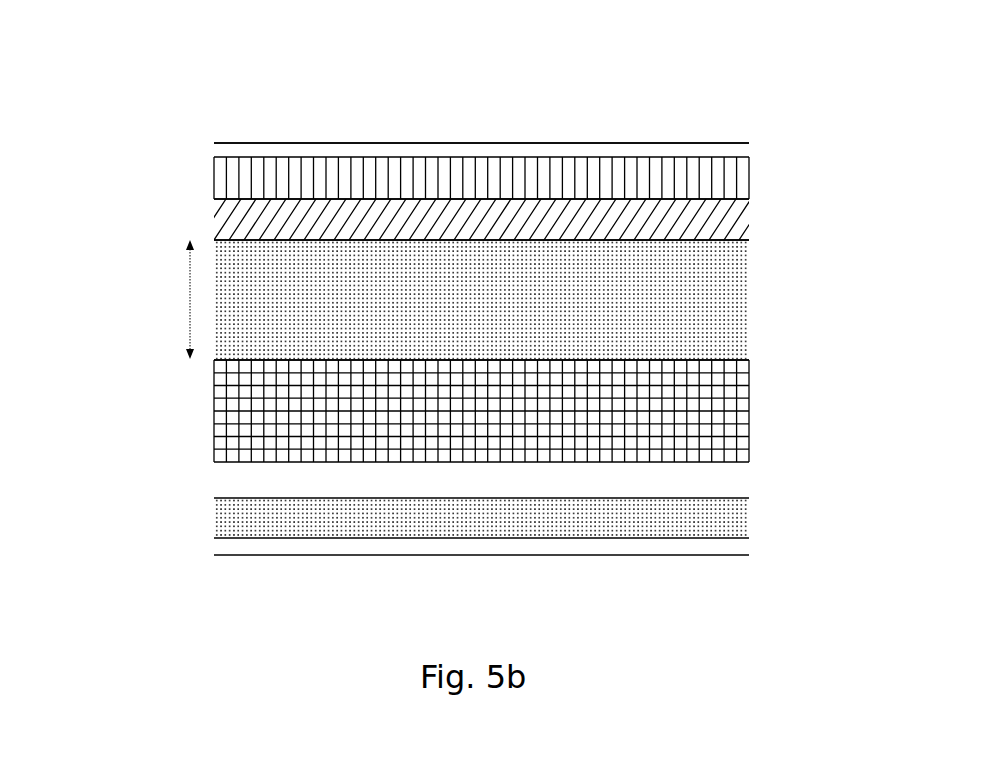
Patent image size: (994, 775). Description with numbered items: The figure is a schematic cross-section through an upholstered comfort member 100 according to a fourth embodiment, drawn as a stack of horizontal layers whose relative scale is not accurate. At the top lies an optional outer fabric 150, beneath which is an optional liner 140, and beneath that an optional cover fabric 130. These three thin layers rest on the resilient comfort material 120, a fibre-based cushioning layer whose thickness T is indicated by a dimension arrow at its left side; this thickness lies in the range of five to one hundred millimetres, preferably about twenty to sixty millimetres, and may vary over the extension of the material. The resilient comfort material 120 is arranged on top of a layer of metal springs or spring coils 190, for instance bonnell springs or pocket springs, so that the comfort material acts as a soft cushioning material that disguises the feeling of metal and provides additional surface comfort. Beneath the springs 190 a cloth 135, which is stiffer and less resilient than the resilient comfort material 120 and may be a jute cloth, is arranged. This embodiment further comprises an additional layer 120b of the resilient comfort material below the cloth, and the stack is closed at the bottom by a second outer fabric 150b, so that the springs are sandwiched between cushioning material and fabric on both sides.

The upholstered comfort member 100 is at (166, 194).
The outer fabric 150 is at (515, 152).
The liner 140 is at (322, 175).
The cover fabric 130 is at (640, 224).
The resilient comfort material 120 is at (650, 307).
The thickness T is at (181, 299).
The springs 190 is at (610, 405).
The cloth 135 is at (236, 487).
The additional layer of resilient comfort material 120b is at (697, 530).
The second outer fabric 150b is at (366, 545).